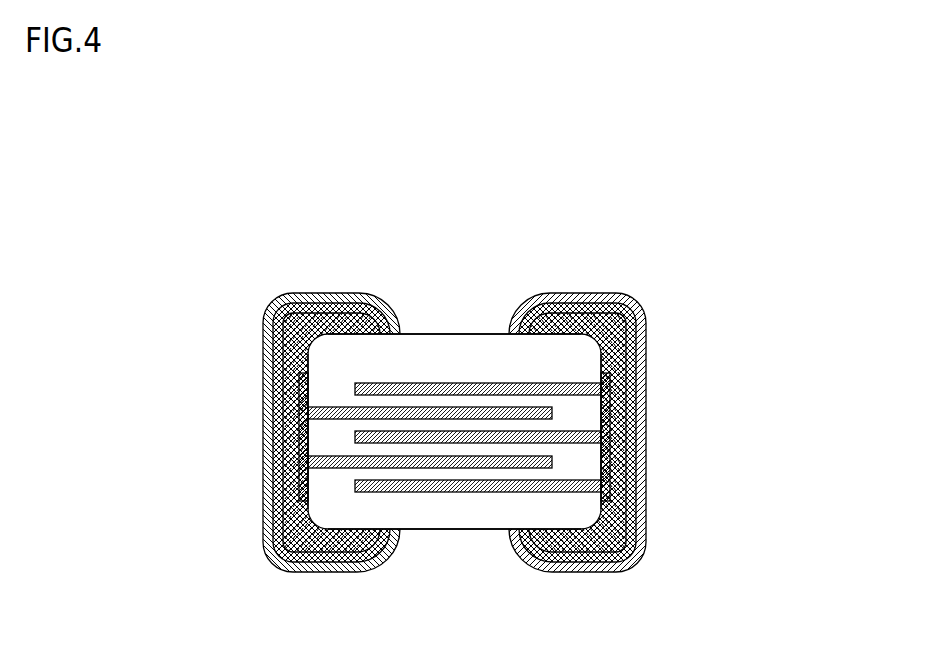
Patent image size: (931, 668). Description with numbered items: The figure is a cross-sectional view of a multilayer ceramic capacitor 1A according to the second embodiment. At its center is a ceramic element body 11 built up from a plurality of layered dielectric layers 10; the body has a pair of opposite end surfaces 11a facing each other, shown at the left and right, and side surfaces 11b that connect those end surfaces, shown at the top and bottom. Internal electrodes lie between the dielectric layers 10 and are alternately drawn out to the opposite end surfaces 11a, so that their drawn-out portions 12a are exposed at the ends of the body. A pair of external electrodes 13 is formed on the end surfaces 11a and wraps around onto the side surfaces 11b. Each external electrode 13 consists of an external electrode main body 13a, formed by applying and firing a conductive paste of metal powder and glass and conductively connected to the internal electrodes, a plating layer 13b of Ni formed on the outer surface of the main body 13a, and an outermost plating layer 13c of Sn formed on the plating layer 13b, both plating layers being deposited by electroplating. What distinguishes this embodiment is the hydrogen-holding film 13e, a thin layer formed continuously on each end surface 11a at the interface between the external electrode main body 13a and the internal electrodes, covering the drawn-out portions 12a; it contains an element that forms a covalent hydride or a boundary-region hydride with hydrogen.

The multilayer ceramic capacitor 1A is at (198, 172).
The dielectric layer 10 is at (388, 427).
The ceramic element body 11 is at (470, 334).
The end surface 11a is at (308, 476).
The side surface 11b is at (490, 335).
The drawn-out portion 12a is at (320, 410).
The external electrode 13 is at (168, 262).
The external electrode main body 13a is at (265, 347).
The plating layer 13b is at (267, 310).
The outermost plating layer 13c is at (284, 293).
The hydrogen-holding film 13e is at (268, 376).